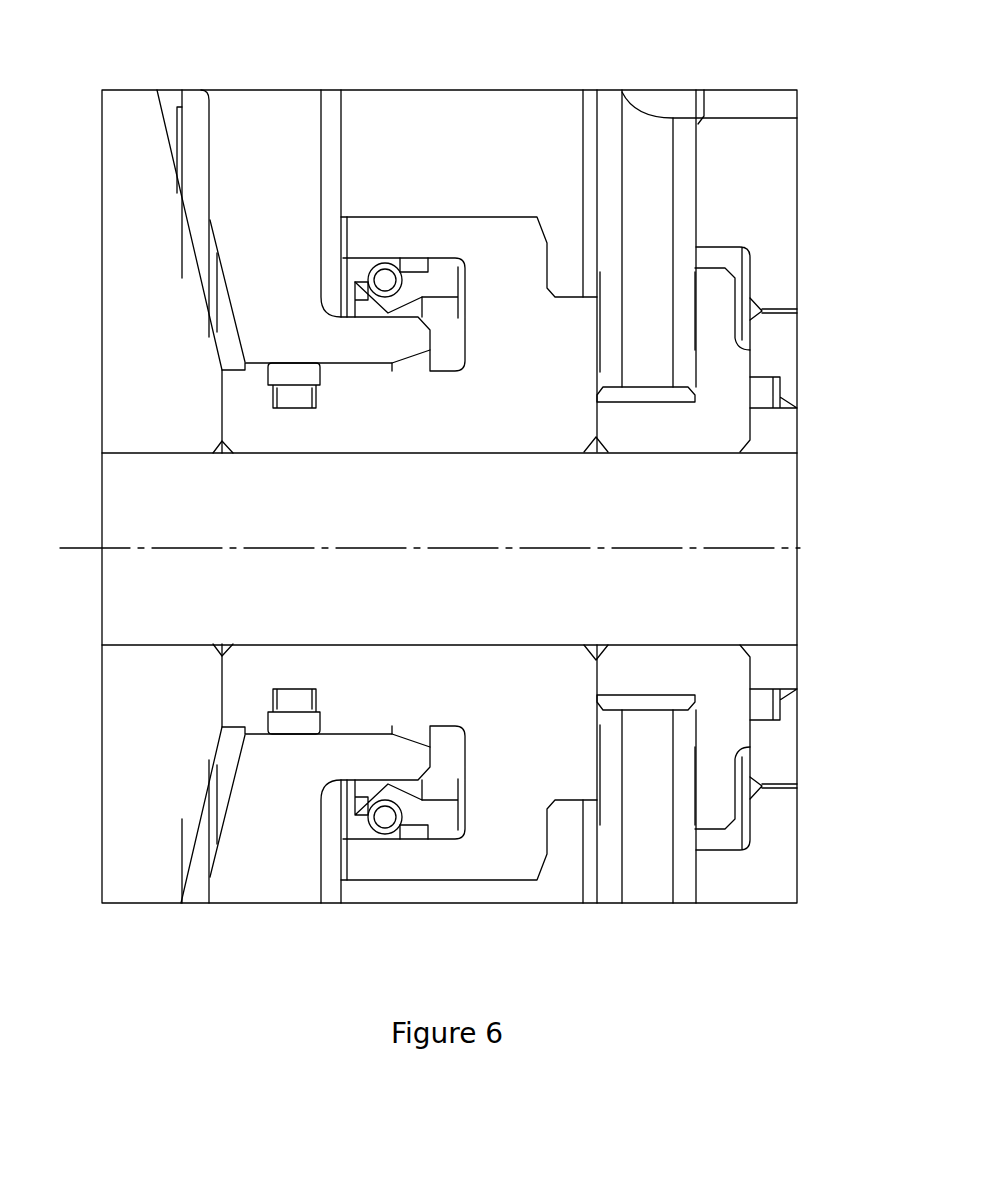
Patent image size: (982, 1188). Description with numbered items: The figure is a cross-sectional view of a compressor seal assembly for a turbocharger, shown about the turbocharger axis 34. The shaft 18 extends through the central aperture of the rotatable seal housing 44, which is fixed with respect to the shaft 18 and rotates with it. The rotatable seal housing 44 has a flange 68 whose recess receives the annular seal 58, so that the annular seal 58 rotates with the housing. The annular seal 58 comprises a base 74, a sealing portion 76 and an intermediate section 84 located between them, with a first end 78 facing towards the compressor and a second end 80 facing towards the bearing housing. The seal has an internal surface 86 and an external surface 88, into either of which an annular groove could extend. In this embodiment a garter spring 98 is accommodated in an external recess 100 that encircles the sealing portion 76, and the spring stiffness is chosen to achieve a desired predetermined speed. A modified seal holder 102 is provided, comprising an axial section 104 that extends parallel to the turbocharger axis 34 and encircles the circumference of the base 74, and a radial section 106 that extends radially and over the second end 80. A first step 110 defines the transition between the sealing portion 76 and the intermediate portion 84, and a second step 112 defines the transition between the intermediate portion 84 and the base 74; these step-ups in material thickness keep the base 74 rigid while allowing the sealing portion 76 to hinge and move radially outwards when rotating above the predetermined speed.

The shaft 18 is at (766, 605).
The turbocharger axis 34 is at (826, 548).
The rotatable seal housing 44 is at (245, 680).
The annular seal 58 is at (418, 283).
The flange 68 is at (357, 865).
The base 74 is at (455, 268).
The sealing portion 76 is at (353, 283).
The first end 78 is at (353, 805).
The second end 80 is at (433, 313).
The intermediate section 84 is at (428, 282).
The internal surface 86 is at (452, 272).
The external surface 88 is at (410, 272).
The garter spring 98 is at (385, 830).
The external recess 100 is at (355, 282).
The modified seal holder 102 is at (463, 832).
The axial section 104 is at (442, 837).
The radial section 106 is at (485, 803).
The first step 110 is at (383, 278).
The second step 112 is at (432, 818).